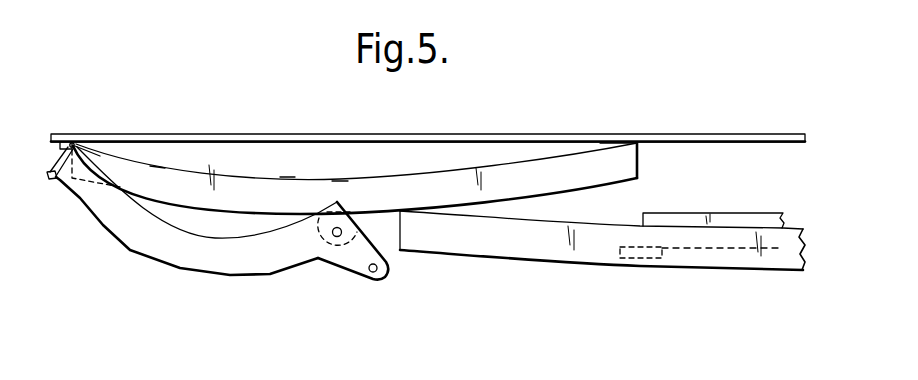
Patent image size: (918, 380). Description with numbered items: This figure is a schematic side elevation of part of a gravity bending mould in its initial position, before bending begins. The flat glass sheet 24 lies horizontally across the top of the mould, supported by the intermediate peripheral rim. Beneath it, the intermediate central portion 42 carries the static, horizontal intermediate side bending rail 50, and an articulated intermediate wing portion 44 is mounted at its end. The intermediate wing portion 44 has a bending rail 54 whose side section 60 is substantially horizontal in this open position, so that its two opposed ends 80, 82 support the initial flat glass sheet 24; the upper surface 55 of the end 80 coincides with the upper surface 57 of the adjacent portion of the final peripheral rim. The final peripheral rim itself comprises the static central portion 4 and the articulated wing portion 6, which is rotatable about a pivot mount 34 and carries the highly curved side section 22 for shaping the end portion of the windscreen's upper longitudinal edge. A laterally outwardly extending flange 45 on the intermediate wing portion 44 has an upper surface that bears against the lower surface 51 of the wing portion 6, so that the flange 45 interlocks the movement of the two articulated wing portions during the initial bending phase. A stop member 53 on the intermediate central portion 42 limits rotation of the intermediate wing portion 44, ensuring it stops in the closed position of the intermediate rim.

The central portion 4 is at (492, 241).
The wing portion 6 is at (203, 254).
The side section 22 is at (143, 227).
The glass sheet 24 is at (390, 134).
The pivot mount 34 is at (373, 272).
The intermediate central portion 42 is at (733, 223).
The intermediate wing portion 44 is at (190, 177).
The flange 45 is at (51, 179).
The intermediate side bending rail 50 is at (287, 175).
The lower surface 51 is at (336, 242).
The stop member 53 is at (642, 228).
The bending rail 54 is at (157, 167).
The upper surface 55 is at (88, 142).
The upper surface 57 is at (59, 143).
The side section 60 is at (340, 183).
The end 80 is at (93, 151).
The end 82 is at (628, 153).